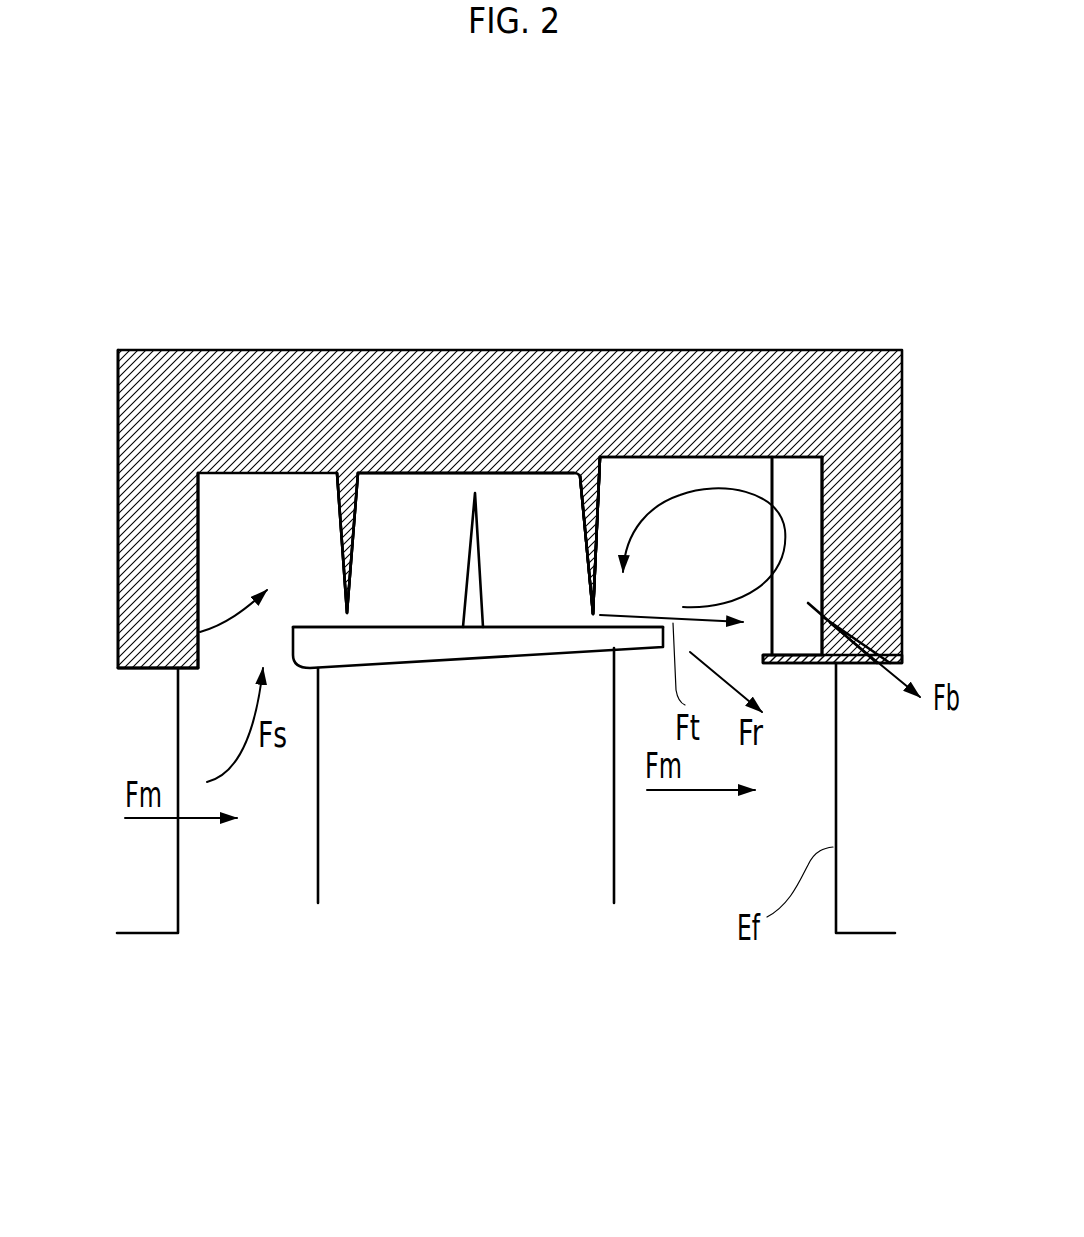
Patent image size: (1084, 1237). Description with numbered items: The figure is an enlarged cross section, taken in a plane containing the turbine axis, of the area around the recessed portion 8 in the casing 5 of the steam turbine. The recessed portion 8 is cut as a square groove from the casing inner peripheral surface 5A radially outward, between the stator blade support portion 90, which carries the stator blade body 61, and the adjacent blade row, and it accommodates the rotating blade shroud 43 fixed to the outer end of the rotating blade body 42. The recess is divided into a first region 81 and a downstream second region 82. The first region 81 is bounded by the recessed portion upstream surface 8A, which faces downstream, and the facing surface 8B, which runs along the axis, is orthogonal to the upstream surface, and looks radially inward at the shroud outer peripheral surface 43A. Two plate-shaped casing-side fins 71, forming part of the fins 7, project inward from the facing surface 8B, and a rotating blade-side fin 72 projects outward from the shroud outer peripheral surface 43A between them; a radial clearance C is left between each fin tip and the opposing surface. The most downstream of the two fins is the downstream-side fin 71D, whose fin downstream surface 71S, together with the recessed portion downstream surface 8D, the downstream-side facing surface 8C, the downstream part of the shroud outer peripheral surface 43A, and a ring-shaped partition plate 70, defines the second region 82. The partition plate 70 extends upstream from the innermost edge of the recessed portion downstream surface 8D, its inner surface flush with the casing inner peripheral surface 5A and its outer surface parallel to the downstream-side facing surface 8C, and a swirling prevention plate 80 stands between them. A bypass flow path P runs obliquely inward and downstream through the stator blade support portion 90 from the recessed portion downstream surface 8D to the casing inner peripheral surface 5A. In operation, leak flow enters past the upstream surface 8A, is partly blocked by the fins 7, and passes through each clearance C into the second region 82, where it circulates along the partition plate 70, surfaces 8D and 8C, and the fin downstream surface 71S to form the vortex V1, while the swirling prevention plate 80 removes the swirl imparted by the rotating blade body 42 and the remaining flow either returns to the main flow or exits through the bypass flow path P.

The casing 5 is at (197, 430).
The casing inner peripheral surface 5A is at (145, 667).
The fin 7 is at (451, 452).
The casing-side fin 71 is at (338, 512).
The downstream-side fin 71D is at (580, 488).
The fin downstream surface 71S is at (603, 495).
The recessed portion 8 is at (178, 630).
The recessed portion upstream surface 8A is at (198, 572).
The facing surface 8B is at (510, 480).
The downstream-side facing surface 8C is at (820, 487).
The recessed portion downstream surface 8D is at (822, 531).
The swirling prevention plate 80 is at (803, 577).
The first region 81 is at (408, 492).
The second region 82 is at (677, 465).
The stator blade support portion 90 is at (168, 530).
The partition plate 70 is at (775, 665).
The rotating blade-side fin 72 is at (480, 535).
The rotating blade shroud 43 is at (432, 630).
The shroud outer peripheral surface 43A is at (520, 615).
The rotating blade body 42 is at (338, 852).
The stator blade body 61 is at (155, 898).
The bypass flow path P is at (860, 632).
The clearance C is at (456, 485).
The vortex V1 is at (704, 547).